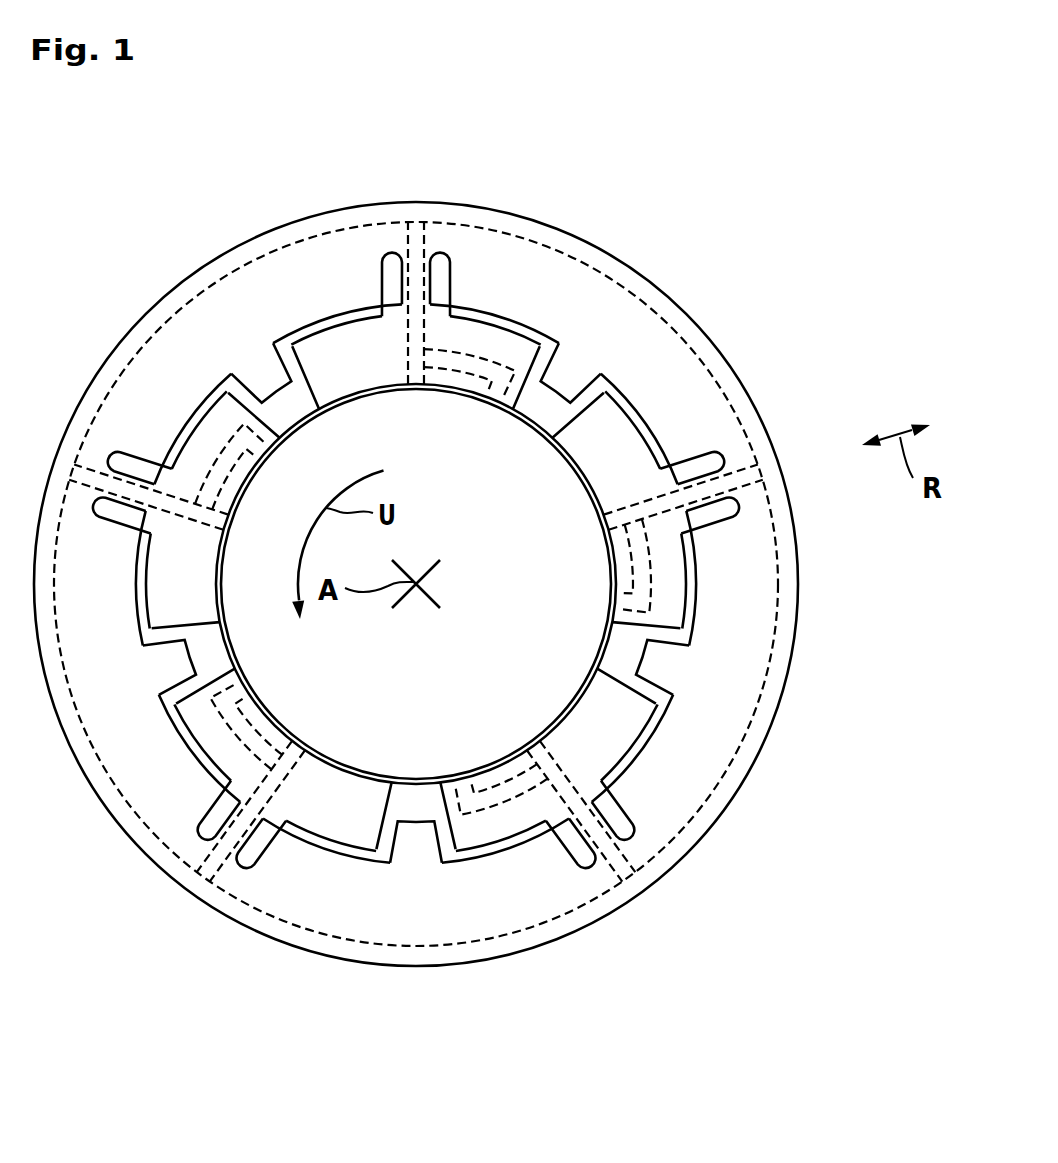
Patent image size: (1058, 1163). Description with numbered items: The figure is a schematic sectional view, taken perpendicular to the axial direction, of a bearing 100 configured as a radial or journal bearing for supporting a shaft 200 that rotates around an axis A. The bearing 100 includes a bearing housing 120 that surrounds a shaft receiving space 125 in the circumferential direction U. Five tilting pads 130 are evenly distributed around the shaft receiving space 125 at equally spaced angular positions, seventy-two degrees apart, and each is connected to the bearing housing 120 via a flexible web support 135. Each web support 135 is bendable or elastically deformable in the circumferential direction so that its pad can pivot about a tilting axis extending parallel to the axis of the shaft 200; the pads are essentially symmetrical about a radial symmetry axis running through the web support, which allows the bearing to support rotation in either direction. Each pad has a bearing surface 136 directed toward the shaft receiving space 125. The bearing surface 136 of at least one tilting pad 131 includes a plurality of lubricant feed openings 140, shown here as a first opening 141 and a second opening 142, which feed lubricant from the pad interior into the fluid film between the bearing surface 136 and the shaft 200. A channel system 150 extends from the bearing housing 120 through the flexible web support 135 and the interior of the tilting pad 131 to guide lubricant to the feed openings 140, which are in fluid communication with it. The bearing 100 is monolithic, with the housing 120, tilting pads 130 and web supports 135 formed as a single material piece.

The bearing 100 is at (726, 215).
The bearing housing 120 is at (657, 390).
The shaft receiving space 125 is at (450, 698).
The tilting pads 130 is at (494, 503).
The at least one tilting pad 131 is at (695, 589).
The flexible web support 135 is at (400, 283).
The bearing surface 136 is at (567, 477).
The lubricant feed openings 140 is at (425, 567).
The first opening 141 is at (615, 604).
The second opening 142 is at (612, 520).
The channel system 150 is at (644, 480).
The shaft 200 is at (503, 477).